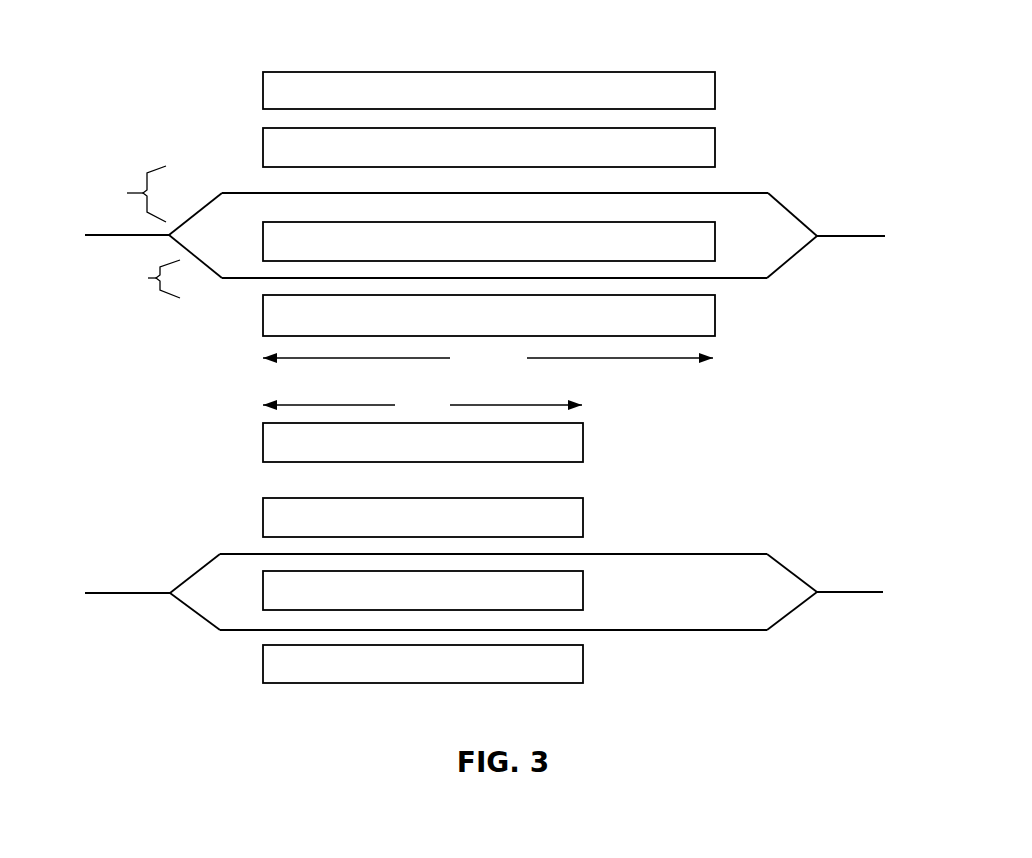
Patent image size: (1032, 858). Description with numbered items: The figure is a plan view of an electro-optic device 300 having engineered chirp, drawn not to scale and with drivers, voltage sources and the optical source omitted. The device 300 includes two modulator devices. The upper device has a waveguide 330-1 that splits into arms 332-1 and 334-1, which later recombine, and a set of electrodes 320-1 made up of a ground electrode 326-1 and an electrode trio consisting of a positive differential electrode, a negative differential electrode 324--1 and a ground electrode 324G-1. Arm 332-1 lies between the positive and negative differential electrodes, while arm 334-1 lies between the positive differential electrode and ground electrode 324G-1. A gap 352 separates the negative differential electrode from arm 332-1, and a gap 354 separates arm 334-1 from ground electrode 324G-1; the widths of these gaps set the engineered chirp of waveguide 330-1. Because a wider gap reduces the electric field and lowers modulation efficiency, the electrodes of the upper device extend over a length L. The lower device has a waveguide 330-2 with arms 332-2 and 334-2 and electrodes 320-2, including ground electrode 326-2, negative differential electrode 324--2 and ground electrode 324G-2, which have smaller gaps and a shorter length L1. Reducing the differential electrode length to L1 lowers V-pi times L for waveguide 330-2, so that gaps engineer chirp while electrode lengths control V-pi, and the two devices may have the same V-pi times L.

The electro-optic device 300 is at (467, 354).
The electrodes 320-1 is at (161, 146).
The electrodes 320-2 is at (220, 496).
The gap 352 is at (241, 183).
The gap 354 is at (243, 289).
The ground electrode 326-1 is at (489, 90).
The differential electrode 324--1 is at (489, 147).
The ground electrode 324G-1 is at (489, 315).
The arm 332-1 is at (770, 193).
The arm 334-1 is at (740, 280).
The waveguide 330-1 is at (814, 266).
The ground electrode 326-2 is at (423, 442).
The differential electrode 324--2 is at (423, 517).
The ground electrode 324G-2 is at (423, 664).
The arm 332-2 is at (777, 553).
The arm 334-2 is at (733, 631).
The waveguide 330-2 is at (131, 612).